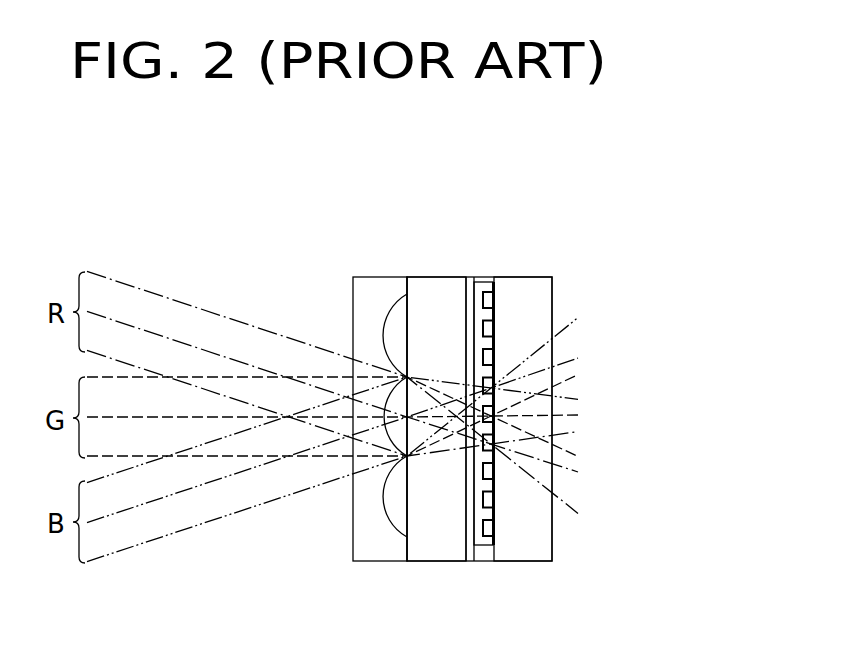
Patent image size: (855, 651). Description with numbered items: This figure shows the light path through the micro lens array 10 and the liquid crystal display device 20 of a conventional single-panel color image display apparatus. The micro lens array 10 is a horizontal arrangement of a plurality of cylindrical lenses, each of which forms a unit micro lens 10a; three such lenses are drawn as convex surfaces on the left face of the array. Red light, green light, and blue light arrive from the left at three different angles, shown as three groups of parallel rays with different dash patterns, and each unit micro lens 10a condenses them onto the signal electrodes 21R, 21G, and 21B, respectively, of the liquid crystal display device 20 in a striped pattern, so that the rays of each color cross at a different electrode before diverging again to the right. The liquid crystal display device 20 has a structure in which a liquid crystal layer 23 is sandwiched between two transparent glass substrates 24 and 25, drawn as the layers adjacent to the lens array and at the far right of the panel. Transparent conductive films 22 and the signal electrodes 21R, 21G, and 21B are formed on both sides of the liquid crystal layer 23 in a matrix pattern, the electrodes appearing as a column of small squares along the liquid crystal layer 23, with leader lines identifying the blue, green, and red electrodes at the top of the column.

The micro lens array 10 is at (361, 563).
The unit micro lens 10a is at (383, 505).
The liquid crystal display device 20 is at (552, 563).
The transparent conductive films 22 is at (468, 285).
The liquid crystal layer 23 is at (483, 283).
The transparent glass substrate 24 is at (418, 282).
The transparent glass substrate 25 is at (535, 280).
The signal electrode 21B is at (493, 300).
The signal electrode 21G is at (493, 329).
The signal electrode 21R is at (493, 357).